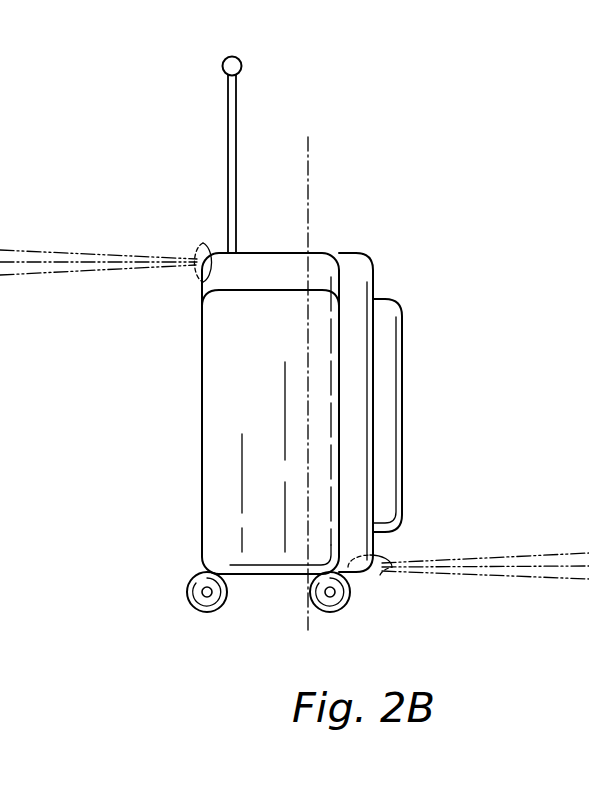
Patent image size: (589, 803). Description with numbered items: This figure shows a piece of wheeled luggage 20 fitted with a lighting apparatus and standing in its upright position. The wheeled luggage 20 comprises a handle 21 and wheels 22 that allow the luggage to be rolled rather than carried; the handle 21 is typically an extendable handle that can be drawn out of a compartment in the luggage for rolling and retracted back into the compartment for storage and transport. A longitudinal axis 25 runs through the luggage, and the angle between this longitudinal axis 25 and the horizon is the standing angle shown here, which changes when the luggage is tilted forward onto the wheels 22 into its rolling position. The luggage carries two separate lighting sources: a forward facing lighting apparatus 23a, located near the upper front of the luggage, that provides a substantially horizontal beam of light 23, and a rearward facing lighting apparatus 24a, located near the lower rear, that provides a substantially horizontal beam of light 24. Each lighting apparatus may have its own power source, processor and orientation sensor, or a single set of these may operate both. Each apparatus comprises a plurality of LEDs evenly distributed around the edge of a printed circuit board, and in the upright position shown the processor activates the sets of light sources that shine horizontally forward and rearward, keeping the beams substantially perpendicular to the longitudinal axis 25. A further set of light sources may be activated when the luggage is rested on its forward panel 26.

The wheeled luggage 20 is at (426, 254).
The handle 21 is at (235, 107).
The wheels 22 is at (187, 592).
The beam of light 23 is at (67, 255).
The forward facing lighting apparatus 23a is at (203, 245).
The beam of light 24 is at (498, 558).
The rearward facing lighting apparatus 24a is at (370, 576).
The longitudinal axis 25 is at (308, 175).
The forward panel 26 is at (201, 447).